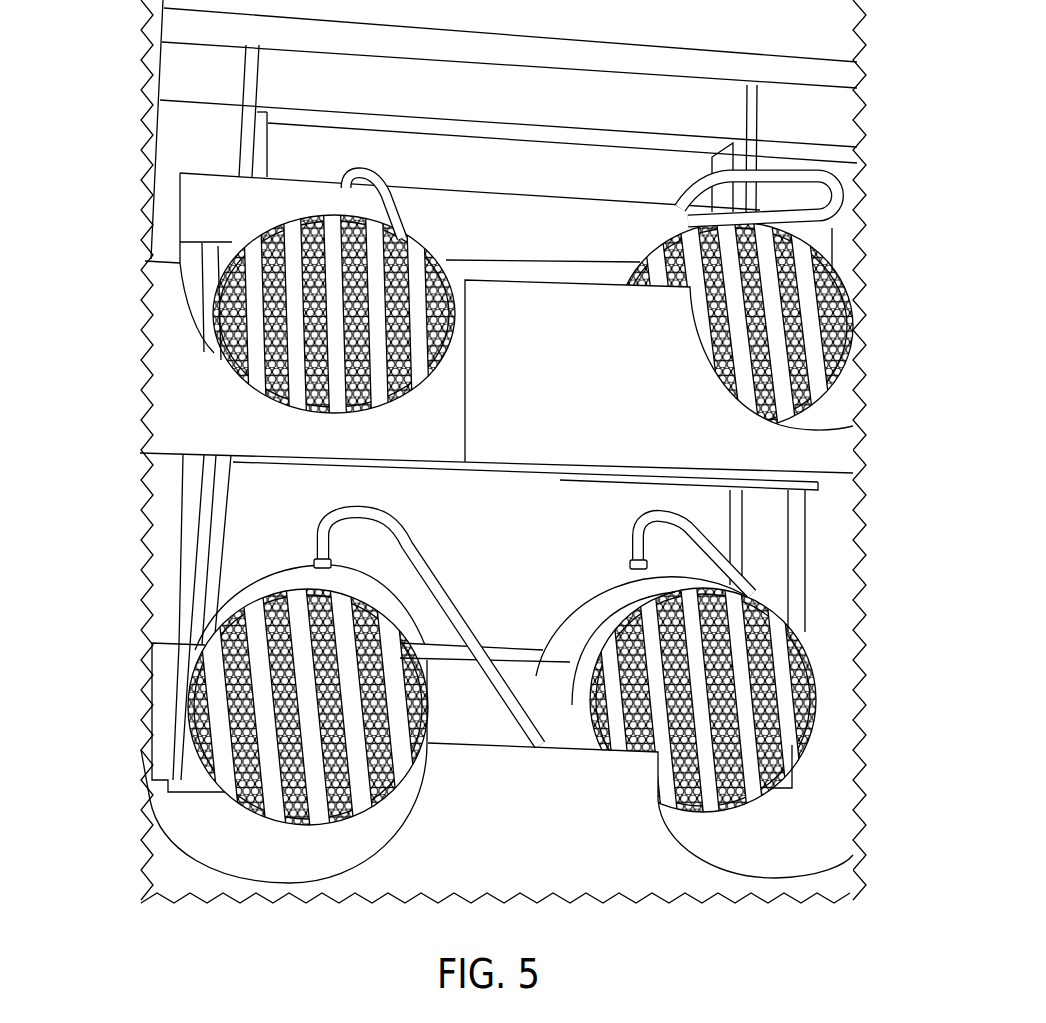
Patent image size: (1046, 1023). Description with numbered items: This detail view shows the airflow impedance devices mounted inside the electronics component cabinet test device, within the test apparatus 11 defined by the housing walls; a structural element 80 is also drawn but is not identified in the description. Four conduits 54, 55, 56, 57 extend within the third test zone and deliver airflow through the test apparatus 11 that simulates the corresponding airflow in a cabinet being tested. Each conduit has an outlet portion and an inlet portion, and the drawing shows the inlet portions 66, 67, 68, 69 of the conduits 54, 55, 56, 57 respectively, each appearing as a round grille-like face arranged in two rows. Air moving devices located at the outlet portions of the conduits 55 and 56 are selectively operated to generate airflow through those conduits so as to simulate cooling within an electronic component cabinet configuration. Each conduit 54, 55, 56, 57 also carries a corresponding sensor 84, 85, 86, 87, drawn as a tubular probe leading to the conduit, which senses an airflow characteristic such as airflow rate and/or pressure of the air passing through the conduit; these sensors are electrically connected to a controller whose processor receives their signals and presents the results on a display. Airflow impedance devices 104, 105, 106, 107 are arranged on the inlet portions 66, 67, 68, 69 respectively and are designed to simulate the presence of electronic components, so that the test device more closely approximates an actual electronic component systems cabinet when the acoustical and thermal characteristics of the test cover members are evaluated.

The test apparatus 11 is at (834, 160).
The frame wall 80 is at (150, 37).
The conduit 54 is at (344, 277).
The conduit 55 is at (686, 310).
The conduit 56 is at (324, 669).
The conduit 57 is at (665, 691).
The inlet portion 66 is at (240, 262).
The inlet portion 67 is at (826, 232).
The inlet portion 68 is at (250, 807).
The inlet portion 69 is at (760, 790).
The sensor 84 is at (386, 173).
The sensor 85 is at (684, 194).
The sensor 86 is at (411, 628).
The sensor 87 is at (637, 560).
The airflow impedance device 104 is at (424, 352).
The airflow impedance device 105 is at (818, 313).
The airflow impedance device 106 is at (213, 667).
The airflow impedance device 107 is at (750, 695).